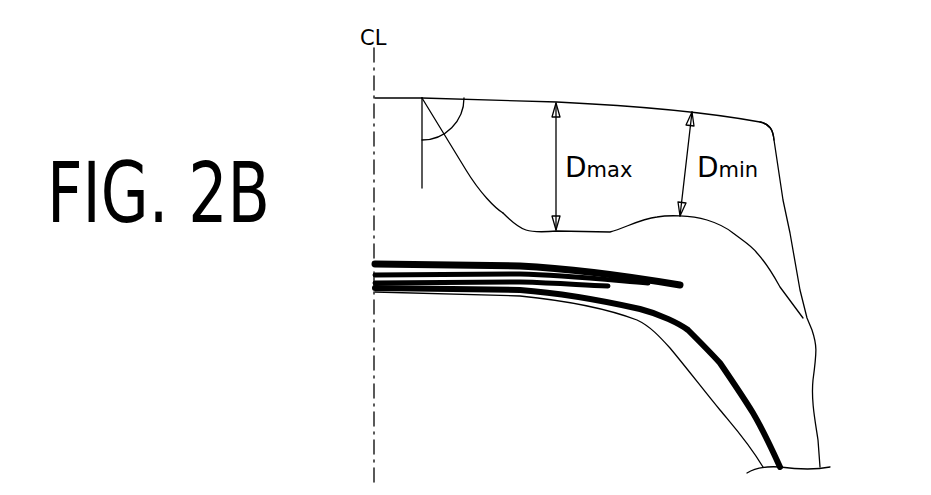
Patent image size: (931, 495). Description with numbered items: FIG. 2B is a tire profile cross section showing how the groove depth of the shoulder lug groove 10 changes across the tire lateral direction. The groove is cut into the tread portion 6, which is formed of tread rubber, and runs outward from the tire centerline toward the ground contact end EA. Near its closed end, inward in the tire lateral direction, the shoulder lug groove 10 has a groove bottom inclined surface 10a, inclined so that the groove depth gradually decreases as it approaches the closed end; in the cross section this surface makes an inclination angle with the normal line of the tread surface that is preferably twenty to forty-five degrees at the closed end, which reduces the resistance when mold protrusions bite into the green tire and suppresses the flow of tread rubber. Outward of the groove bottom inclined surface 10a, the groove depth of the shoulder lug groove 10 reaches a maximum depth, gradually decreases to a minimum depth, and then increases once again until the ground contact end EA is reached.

The tread portion 6 is at (398, 117).
The shoulder lug groove 10 is at (600, 112).
The groove bottom inclined surface 10a is at (462, 98).
The ground contact end EA is at (760, 122).